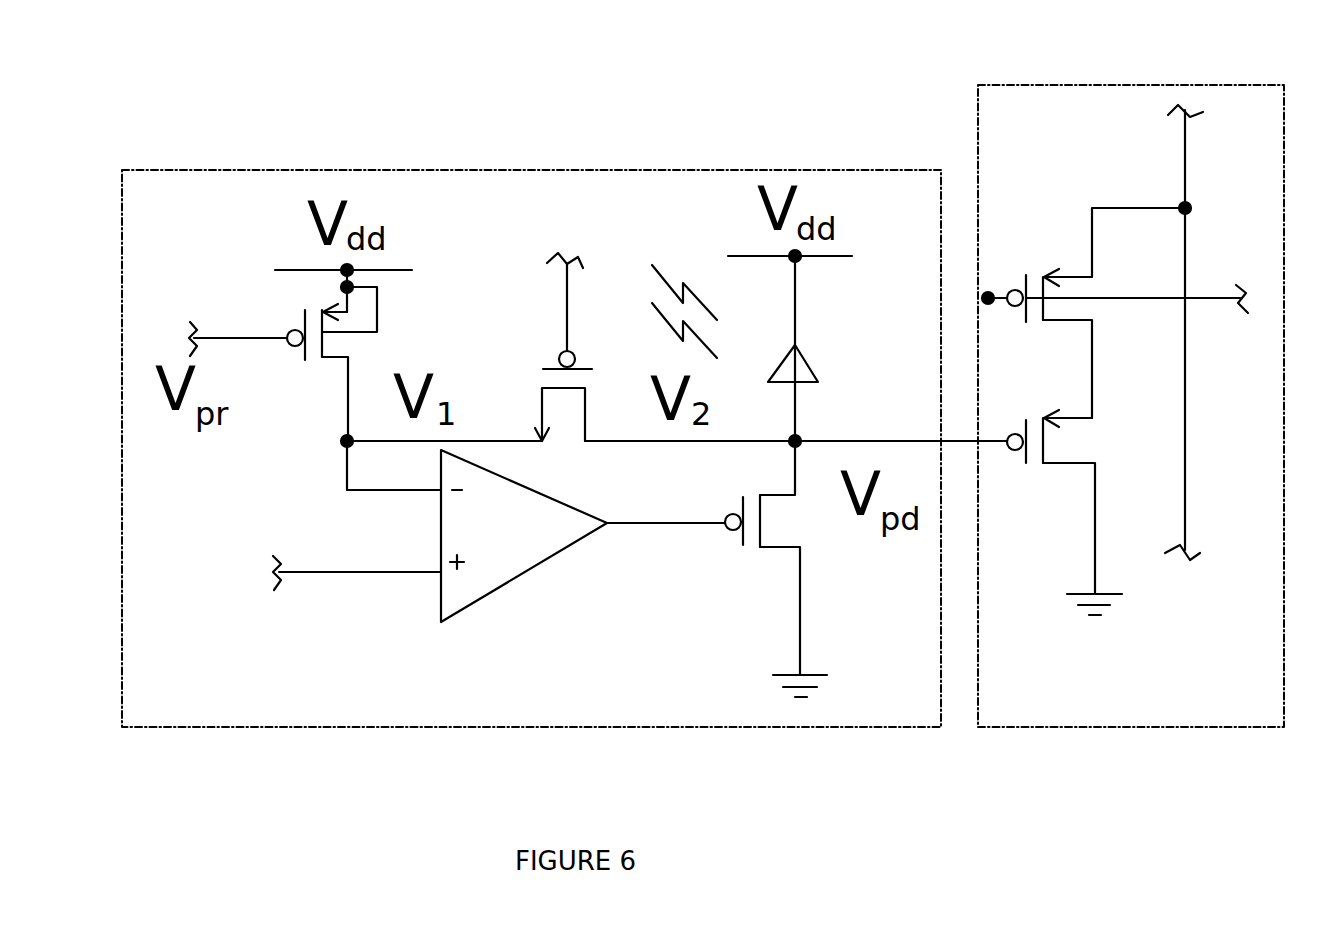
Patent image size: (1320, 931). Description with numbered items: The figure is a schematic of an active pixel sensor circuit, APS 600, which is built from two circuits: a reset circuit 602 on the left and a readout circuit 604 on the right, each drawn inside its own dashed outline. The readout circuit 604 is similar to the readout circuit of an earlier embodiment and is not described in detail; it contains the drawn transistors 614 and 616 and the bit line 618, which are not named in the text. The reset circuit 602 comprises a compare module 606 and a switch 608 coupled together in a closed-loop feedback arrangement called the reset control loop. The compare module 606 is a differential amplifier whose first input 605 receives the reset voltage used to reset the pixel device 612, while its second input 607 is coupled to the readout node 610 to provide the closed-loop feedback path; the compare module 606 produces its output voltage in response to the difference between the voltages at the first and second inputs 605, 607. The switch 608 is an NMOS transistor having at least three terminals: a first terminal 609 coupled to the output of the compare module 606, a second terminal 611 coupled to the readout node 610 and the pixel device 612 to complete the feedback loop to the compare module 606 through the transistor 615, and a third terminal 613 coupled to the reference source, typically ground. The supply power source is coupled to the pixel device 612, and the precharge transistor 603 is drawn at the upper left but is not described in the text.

The APS circuit 600 is at (588, 77).
The reset circuit 602 is at (167, 151).
The precharge PMOS transistor 603 is at (304, 312).
The readout circuit 604 is at (1278, 86).
The first input 605 is at (363, 575).
The compare module 606 is at (467, 604).
The second input 607 is at (346, 491).
The switch 608 is at (760, 552).
The first terminal 609 is at (617, 525).
The readout node 610 is at (801, 439).
The second terminal 611 is at (795, 474).
The pixel device 612 is at (808, 363).
The third terminal 613 is at (800, 622).
The word line access transistor 614 is at (1040, 270).
The transistor 615 is at (541, 389).
The pull-down transistor 616 is at (1106, 458).
The bit line 618 is at (1186, 170).